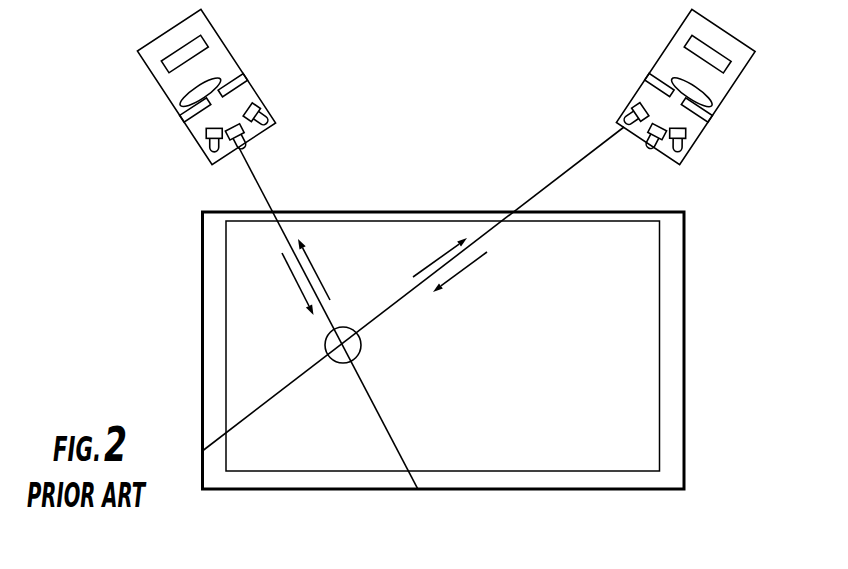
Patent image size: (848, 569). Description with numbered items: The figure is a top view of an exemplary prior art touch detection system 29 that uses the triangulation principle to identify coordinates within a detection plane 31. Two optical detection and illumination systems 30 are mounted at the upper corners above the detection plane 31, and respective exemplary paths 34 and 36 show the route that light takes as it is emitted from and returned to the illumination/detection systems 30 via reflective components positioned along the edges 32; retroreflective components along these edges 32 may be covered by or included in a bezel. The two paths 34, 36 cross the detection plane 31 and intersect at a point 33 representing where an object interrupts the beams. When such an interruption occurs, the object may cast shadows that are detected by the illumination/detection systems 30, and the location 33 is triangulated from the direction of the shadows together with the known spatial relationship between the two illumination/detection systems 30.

The touch detection system 29 is at (439, 96).
The optical detection and illumination system 30 is at (240, 62).
The detection plane 31 is at (615, 447).
The edges 32 is at (201, 311).
The location of interruption 33 is at (346, 364).
The path 34 is at (266, 200).
The path 36 is at (572, 172).